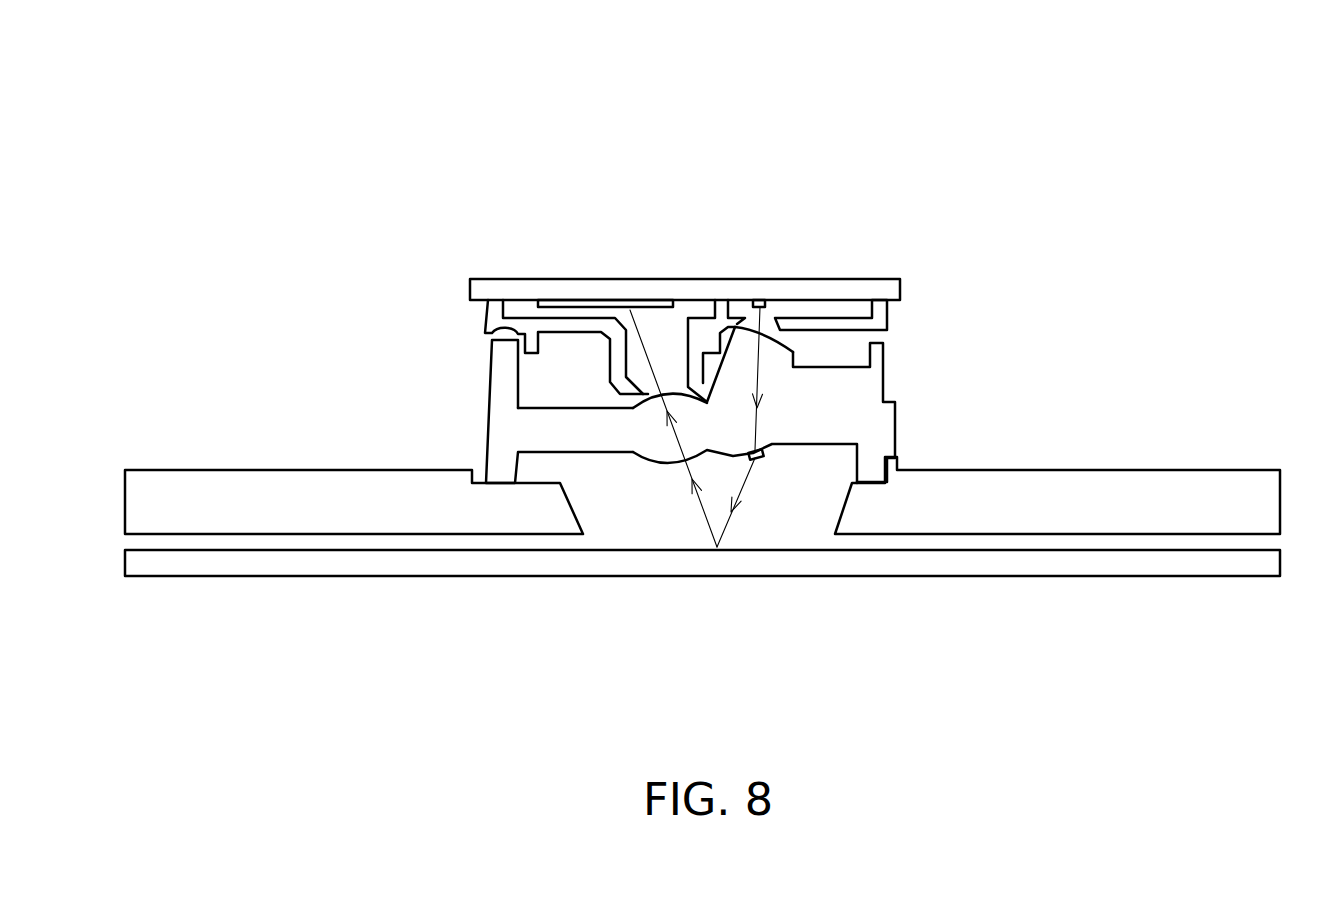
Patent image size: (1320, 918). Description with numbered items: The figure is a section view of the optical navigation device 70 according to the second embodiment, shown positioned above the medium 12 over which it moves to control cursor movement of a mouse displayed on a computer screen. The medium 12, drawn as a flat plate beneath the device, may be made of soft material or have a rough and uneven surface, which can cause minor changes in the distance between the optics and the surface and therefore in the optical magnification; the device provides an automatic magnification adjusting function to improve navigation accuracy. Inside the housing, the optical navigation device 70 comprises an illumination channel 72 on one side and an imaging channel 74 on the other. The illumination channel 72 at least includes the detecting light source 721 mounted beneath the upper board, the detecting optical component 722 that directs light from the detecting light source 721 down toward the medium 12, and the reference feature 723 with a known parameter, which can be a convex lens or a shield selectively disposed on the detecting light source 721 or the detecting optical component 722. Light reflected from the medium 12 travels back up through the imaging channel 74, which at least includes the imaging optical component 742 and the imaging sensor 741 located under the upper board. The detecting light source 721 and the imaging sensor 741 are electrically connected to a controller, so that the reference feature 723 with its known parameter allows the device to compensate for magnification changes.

The optical navigation device 70 is at (1100, 135).
The illumination channel 72 is at (715, 228).
The detecting light source 721 is at (758, 300).
The detecting optical component 722 is at (772, 363).
The reference feature 723 is at (758, 452).
The imaging channel 74 is at (550, 228).
The imaging sensor 741 is at (583, 300).
The imaging optical component 742 is at (688, 413).
The medium 12 is at (830, 560).